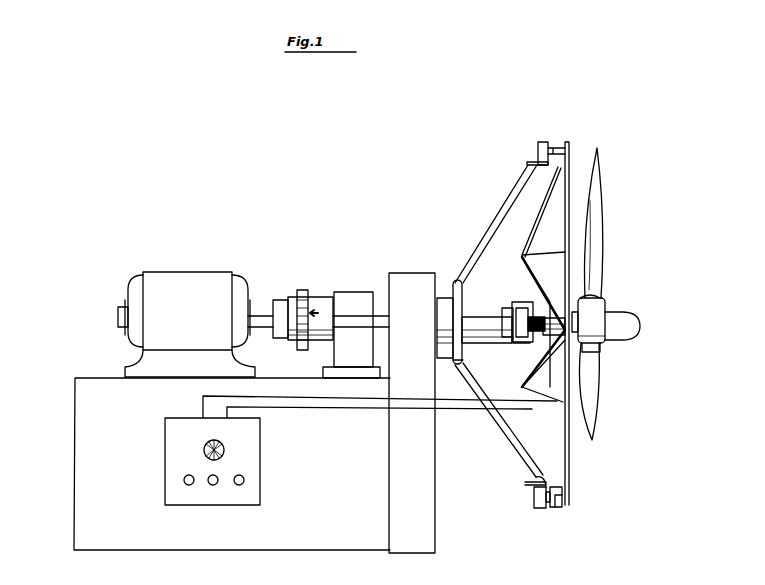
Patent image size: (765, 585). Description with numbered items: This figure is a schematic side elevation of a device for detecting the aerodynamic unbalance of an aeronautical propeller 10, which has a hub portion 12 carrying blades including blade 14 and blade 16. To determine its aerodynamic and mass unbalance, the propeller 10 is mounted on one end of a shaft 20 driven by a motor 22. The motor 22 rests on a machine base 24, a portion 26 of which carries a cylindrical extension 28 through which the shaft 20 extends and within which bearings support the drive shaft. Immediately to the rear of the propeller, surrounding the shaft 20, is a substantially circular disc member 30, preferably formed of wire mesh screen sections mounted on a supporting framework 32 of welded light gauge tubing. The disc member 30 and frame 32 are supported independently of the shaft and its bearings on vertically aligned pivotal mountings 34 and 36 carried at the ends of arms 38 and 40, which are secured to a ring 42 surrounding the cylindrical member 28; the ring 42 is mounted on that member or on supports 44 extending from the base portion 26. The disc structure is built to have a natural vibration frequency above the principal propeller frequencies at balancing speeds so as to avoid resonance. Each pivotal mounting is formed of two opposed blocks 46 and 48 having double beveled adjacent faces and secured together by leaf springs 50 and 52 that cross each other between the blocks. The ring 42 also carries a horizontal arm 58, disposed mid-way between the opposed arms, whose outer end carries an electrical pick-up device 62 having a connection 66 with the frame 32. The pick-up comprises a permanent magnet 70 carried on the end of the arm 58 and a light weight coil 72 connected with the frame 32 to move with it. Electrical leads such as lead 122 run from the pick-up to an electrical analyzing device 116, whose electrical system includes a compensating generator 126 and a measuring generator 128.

The aeronautical propeller 10 is at (617, 306).
The hub portion 12 is at (636, 336).
The blade 14 is at (604, 190).
The blade 16 is at (598, 400).
The shaft 20 is at (380, 316).
The motor 22 is at (193, 272).
The machine base 24 is at (74, 458).
The portion of machine base 26 is at (428, 457).
The cylindrical extension 28 is at (447, 298).
The disc member 30 is at (570, 170).
The supporting framework 32 is at (527, 245).
The pivotal mounting 34 is at (563, 142).
The pivotal mounting 36 is at (557, 510).
The arm 38 is at (512, 197).
The arm 40 is at (505, 450).
The ring 42 is at (463, 292).
The supports 44 is at (460, 370).
The block 46 is at (533, 506).
The block 48 is at (562, 495).
The leaf spring 50 is at (532, 479).
The leaf spring 52 is at (547, 510).
The arm 58 is at (493, 320).
The electrical pick-up device 62 is at (526, 297).
The connection 66 is at (592, 348).
The permanent magnet 70 is at (515, 345).
The coil 72 is at (586, 298).
The electrical analyzing device 116 is at (158, 460).
The lead 122 is at (320, 396).
The compensating generator 126 is at (328, 297).
The measuring generator 128 is at (300, 290).